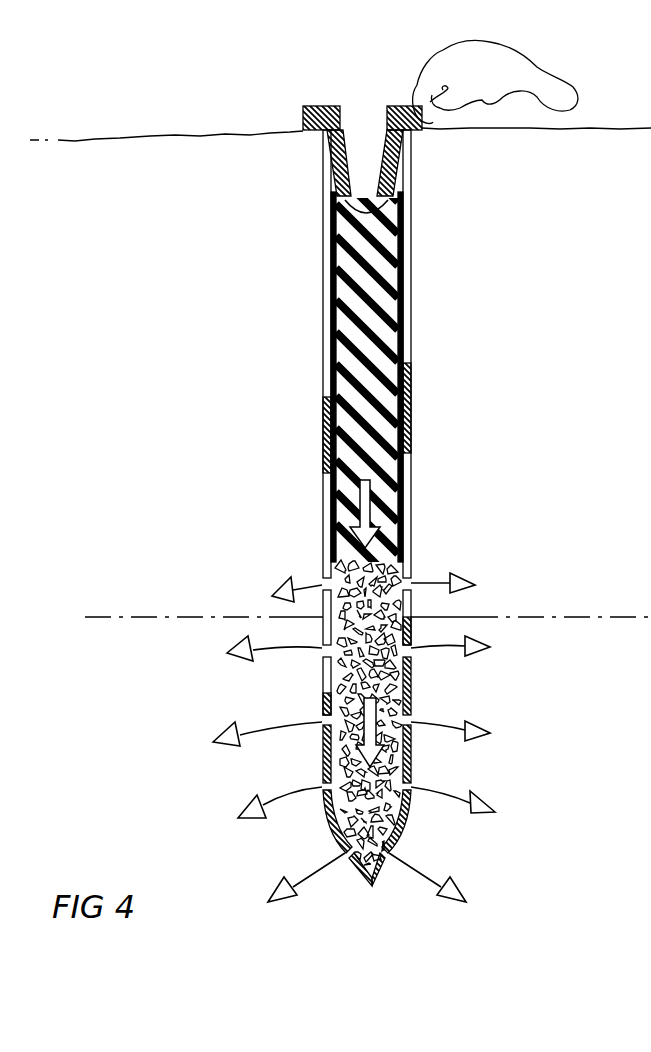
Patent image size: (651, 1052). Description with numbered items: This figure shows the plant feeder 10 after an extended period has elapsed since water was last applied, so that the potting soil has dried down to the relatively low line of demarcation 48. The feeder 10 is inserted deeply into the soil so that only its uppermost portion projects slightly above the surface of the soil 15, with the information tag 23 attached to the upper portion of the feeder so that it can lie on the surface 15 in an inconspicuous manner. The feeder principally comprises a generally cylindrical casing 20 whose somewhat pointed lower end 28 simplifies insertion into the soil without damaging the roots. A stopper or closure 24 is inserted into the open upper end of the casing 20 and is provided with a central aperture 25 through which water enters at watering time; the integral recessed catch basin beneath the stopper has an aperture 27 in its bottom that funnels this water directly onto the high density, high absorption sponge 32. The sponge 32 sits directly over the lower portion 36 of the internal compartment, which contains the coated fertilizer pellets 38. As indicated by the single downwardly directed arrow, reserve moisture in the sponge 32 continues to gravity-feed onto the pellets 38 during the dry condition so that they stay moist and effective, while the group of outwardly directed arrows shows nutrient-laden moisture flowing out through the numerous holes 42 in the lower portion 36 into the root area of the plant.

The plant feeder 10 is at (517, 330).
The surface of the soil 15 is at (81, 149).
The casing 20 is at (328, 357).
The information tag 23 is at (527, 70).
The stopper or closure 24 is at (319, 106).
The central aperture 25 is at (387, 118).
The aperture 27 is at (393, 227).
The lower end 28 is at (372, 886).
The sponge 32 is at (340, 264).
The lower portion of the compartment 36 is at (392, 687).
The coated pellets 38 is at (352, 677).
The holes 42 is at (322, 721).
The line of demarcation 48 is at (130, 616).